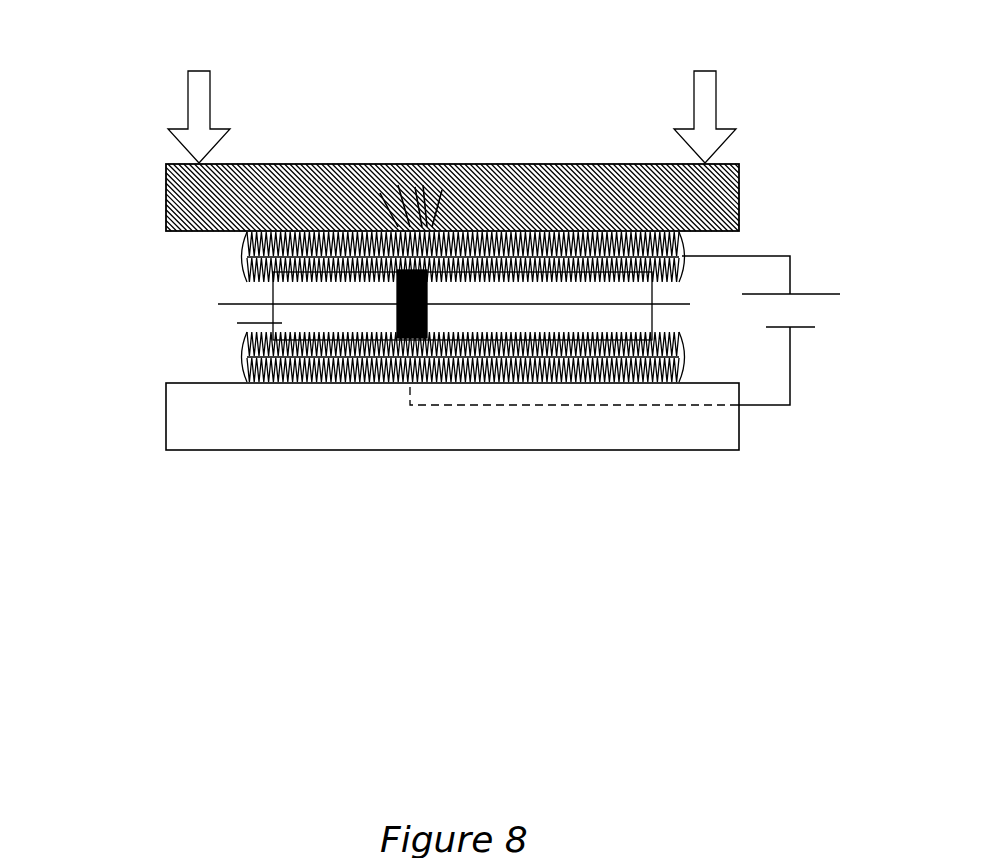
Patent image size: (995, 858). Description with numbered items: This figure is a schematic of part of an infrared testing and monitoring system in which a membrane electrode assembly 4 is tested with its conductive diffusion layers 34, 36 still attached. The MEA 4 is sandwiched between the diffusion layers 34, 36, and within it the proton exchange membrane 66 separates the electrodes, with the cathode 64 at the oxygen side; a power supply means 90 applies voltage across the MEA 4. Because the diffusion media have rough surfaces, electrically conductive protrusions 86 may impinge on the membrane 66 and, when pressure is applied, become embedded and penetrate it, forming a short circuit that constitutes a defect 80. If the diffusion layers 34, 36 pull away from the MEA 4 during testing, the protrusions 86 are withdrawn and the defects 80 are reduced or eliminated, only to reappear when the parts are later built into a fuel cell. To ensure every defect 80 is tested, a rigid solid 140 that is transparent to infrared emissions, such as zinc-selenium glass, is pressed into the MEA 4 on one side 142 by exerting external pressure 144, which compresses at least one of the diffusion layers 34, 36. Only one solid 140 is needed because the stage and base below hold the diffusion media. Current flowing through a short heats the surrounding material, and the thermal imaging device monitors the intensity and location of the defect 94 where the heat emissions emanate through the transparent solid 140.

The membrane electrode assembly 4 is at (702, 290).
The diffusion layer 34 is at (239, 253).
The diffusion layer 36 is at (240, 353).
The cathode 64 is at (273, 323).
The proton exchange membrane 66 is at (240, 304).
The defect 80 is at (397, 320).
The diffusion layer protrusion 86 is at (362, 283).
The power supply means 90 is at (807, 294).
The defect heat emission location 94 is at (410, 192).
The solid surface 140 is at (177, 195).
The side of the MEA 142 is at (525, 278).
The external pressure 144 is at (197, 98).